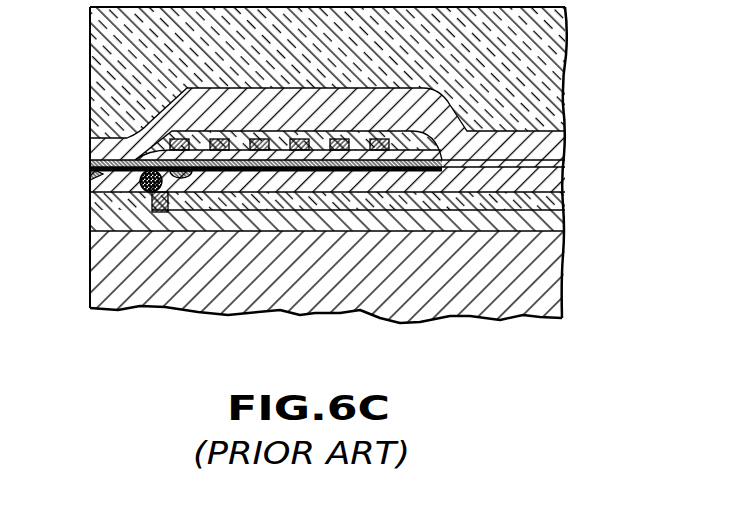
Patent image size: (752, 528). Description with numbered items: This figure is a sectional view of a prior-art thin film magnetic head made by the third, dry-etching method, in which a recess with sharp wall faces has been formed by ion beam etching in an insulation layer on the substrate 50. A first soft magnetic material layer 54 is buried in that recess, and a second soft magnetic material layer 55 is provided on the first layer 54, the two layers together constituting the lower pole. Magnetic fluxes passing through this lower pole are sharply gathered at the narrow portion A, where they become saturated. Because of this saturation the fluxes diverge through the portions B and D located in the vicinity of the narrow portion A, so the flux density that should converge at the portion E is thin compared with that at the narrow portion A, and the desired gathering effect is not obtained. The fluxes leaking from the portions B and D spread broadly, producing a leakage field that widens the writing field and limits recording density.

The substrate 50 is at (547, 290).
The first soft magnetic material layer 54 is at (550, 200).
The second soft magnetic material layer 55 is at (92, 186).
The narrow portion A is at (92, 237).
The portion B is at (154, 212).
The portion D is at (186, 178).
The portion E is at (92, 175).